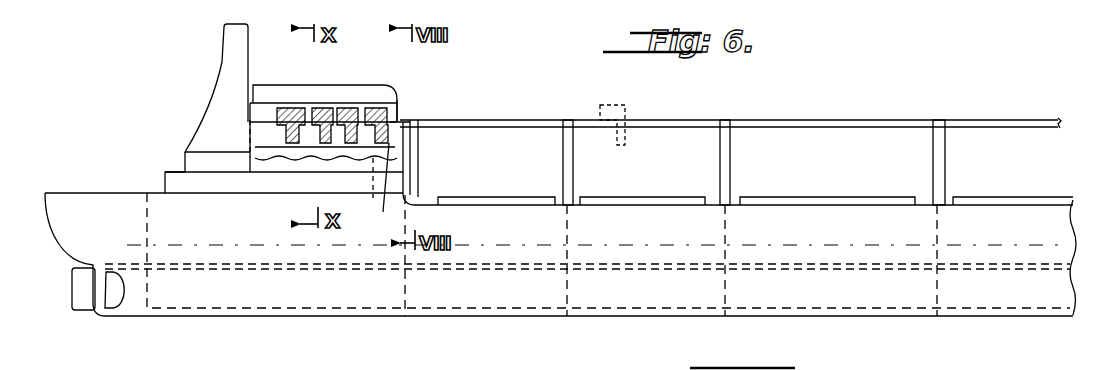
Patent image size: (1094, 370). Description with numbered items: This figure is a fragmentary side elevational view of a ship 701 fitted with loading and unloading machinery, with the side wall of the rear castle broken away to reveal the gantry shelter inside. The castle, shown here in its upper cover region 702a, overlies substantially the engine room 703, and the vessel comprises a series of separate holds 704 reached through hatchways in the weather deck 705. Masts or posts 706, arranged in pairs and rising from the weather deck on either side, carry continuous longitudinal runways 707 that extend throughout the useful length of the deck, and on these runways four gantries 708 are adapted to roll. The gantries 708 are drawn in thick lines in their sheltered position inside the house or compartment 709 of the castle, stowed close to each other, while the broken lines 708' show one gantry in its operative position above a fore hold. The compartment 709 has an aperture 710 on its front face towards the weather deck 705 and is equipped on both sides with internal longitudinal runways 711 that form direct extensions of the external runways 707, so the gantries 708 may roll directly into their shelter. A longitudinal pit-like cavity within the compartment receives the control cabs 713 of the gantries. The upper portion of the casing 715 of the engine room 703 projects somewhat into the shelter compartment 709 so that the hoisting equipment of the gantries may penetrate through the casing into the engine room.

The ship 701 is at (414, 318).
The cover of the lift device 702a is at (302, 88).
The engine room 703 is at (223, 302).
The holds 704 is at (592, 305).
The weather deck 705 is at (925, 197).
The masts or posts 706 is at (415, 178).
The longitudinal runways 707 is at (583, 120).
The gantries 708 is at (338, 151).
The gantry in operative position 708' is at (646, 112).
The house or compartment 709 is at (260, 113).
The aperture 710 is at (400, 113).
The internal longitudinal runways 711 is at (250, 133).
The control cabs 713 is at (392, 189).
The casing 715 is at (250, 157).